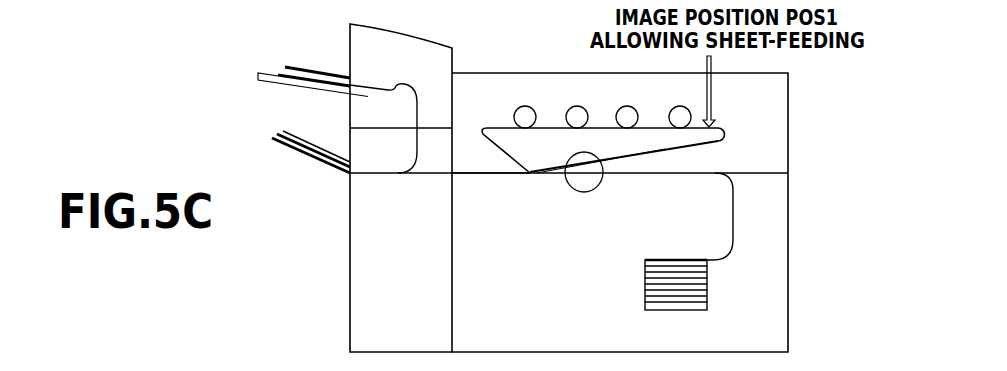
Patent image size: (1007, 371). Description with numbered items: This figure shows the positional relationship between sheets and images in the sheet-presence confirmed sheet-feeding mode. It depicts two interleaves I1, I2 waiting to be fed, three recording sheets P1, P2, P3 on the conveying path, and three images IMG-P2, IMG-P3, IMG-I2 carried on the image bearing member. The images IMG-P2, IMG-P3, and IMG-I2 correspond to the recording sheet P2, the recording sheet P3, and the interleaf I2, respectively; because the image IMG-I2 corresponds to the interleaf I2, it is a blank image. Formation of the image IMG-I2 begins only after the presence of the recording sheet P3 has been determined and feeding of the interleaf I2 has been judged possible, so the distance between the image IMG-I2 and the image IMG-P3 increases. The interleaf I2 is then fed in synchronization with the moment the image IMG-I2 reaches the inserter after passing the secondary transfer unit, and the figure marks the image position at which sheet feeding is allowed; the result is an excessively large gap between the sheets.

The interleaf I2 is at (311, 67).
The interleaf I1 is at (320, 150).
The image IMG-I2 is at (514, 108).
The recording sheet P1 is at (480, 175).
The recording sheet P2 is at (562, 175).
The image IMG-P3 is at (653, 151).
The image IMG-P2 is at (603, 180).
The recording sheet P3 is at (697, 259).